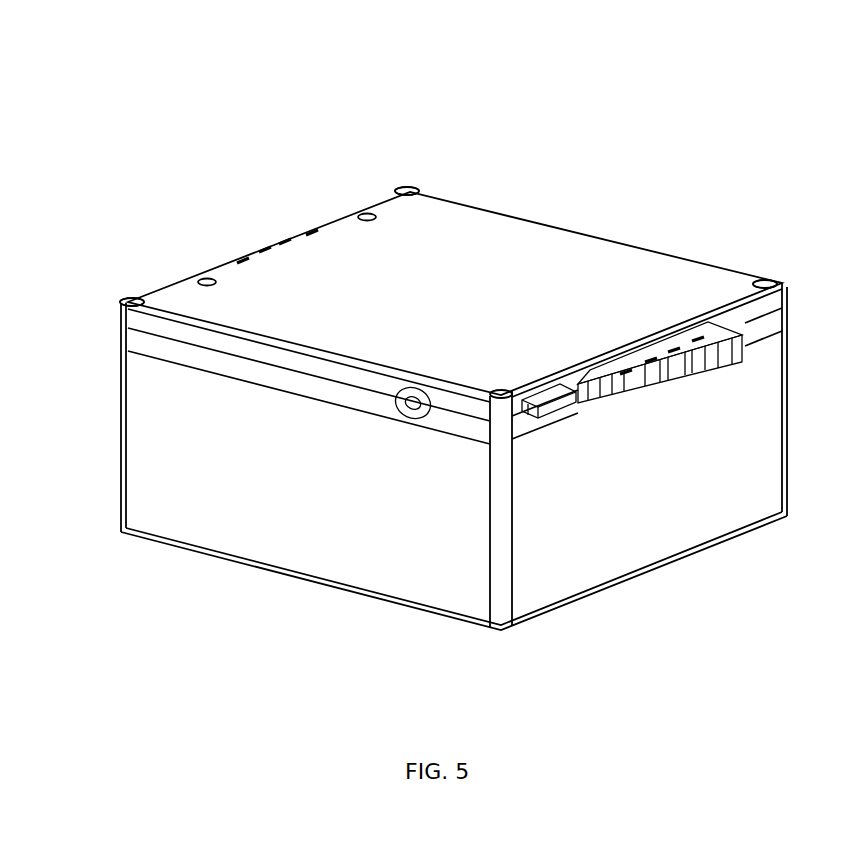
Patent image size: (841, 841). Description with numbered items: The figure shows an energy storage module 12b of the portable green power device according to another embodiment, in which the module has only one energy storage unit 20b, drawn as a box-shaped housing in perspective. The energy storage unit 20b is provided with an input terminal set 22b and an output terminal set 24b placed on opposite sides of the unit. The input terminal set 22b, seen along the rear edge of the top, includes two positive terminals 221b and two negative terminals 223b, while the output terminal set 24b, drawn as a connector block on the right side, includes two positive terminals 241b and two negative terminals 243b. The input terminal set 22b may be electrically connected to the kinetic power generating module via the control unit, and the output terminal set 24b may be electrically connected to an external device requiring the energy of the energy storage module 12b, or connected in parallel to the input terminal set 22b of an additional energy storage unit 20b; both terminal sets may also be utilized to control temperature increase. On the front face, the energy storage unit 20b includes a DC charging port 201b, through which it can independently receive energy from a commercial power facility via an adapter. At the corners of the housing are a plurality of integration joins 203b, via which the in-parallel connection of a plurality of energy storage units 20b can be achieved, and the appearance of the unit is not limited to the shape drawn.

The energy storage module 12b is at (708, 156).
The energy storage unit 20b is at (262, 518).
The DC charging port 201b is at (406, 403).
The integration joins 203b is at (130, 297).
The input terminal set 22b is at (223, 90).
The positive terminals 221b is at (263, 250).
The negative terminals 223b is at (238, 261).
The output terminal set 24b is at (657, 512).
The positive terminals 241b is at (707, 400).
The negative terminals 243b is at (638, 410).